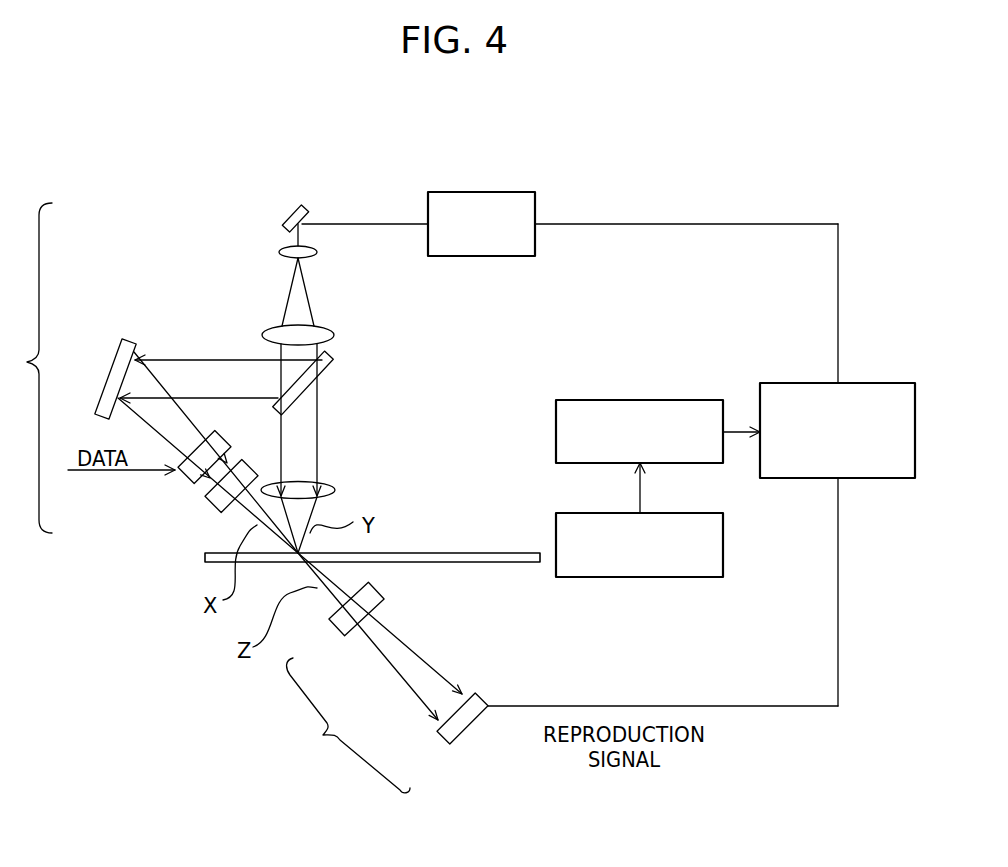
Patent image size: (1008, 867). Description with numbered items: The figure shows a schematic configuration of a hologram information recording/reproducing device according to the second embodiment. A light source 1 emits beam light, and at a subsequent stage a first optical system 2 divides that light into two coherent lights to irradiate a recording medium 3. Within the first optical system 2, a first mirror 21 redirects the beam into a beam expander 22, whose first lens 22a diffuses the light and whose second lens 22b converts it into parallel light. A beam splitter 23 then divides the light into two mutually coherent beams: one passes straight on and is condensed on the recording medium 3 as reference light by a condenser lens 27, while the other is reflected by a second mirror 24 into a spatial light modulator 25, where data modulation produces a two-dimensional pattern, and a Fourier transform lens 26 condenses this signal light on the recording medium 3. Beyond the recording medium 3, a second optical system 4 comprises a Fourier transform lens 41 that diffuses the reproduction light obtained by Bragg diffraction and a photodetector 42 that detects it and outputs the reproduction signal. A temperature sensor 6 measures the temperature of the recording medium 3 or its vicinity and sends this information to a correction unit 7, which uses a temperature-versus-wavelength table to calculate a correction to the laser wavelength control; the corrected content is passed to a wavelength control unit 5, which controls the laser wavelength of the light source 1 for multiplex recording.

The light source 1 is at (535, 210).
The first optical system 2 is at (29, 368).
The recording medium 3 is at (472, 557).
The second optical system 4 is at (400, 689).
The wavelength control unit 5 is at (860, 383).
The temperature sensor 6 is at (700, 578).
The correction unit 7 is at (677, 400).
The first mirror 21 is at (303, 211).
The beam expander 22 is at (292, 294).
The first lens 22a is at (278, 252).
The second lens 22b is at (262, 335).
The beam splitter 23 is at (332, 365).
The second mirror 24 is at (115, 368).
The spatial light modulator 25 is at (177, 477).
The Fourier transform lens 26 is at (212, 503).
The condenser lens 27 is at (335, 488).
The Fourier transform lens 41 is at (375, 595).
The photodetector 42 is at (458, 728).